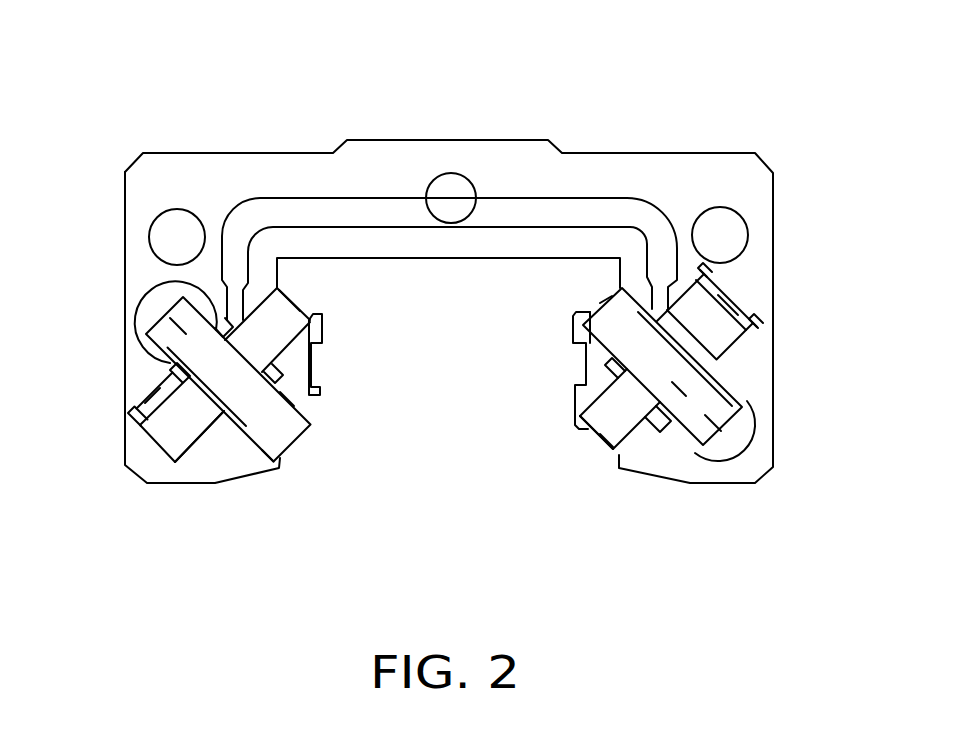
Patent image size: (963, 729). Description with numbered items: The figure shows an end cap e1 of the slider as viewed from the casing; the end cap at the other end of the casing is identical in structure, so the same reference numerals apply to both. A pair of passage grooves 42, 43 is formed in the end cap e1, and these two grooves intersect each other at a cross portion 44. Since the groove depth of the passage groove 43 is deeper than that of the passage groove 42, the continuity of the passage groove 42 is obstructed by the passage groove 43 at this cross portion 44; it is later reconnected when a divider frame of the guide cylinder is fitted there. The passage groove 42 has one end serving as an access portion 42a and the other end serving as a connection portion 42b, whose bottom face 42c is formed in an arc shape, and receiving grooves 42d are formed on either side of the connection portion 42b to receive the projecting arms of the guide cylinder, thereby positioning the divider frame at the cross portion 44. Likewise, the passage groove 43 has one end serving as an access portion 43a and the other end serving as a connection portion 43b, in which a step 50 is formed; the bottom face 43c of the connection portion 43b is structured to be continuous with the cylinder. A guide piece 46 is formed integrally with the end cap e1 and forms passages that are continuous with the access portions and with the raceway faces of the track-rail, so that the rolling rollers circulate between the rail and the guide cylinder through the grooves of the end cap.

The passage groove 42 is at (320, 378).
The access portion 42a is at (290, 300).
The connection portion 42b is at (150, 432).
The bottom face 42c is at (152, 445).
The receiving grooves 42d is at (128, 420).
The passage groove 43 is at (160, 341).
The access portion 43a is at (290, 452).
The connection portion 43b is at (177, 325).
The bottom face 43c is at (287, 398).
The cross portion 44 is at (223, 380).
The guide piece 46 is at (320, 348).
The step 50 is at (143, 313).
The end cap e1 is at (440, 106).